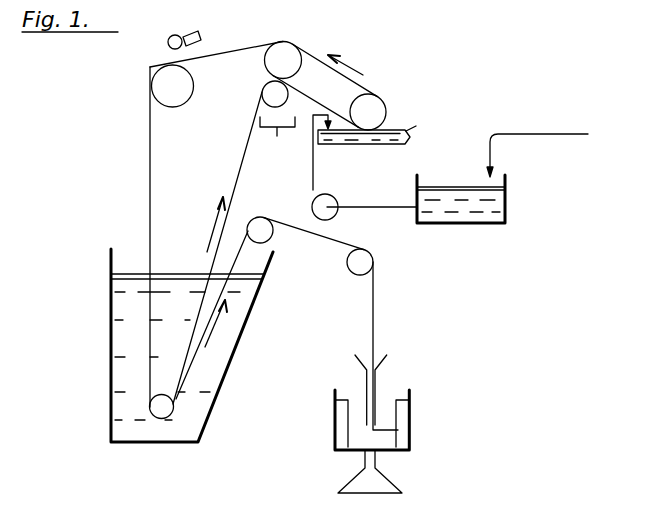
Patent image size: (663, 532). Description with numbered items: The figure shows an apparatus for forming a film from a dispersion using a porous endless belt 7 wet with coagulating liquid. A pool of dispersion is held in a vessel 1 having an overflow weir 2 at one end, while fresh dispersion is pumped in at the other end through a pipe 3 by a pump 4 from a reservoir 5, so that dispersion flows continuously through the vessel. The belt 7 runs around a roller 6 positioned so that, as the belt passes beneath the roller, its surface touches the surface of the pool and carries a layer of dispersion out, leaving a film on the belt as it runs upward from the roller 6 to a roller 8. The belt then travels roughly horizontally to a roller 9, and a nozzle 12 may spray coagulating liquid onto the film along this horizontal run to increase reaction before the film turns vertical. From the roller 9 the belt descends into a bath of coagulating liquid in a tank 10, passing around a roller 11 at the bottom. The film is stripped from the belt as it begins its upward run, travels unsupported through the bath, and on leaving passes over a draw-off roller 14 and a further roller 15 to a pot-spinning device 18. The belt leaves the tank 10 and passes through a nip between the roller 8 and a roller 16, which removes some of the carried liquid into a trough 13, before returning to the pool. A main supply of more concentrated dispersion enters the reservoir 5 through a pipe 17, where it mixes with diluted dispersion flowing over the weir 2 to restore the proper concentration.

The vessel 1 is at (343, 146).
The overflow weir 2 is at (412, 140).
The pipe 3 is at (312, 185).
The pump 4 is at (338, 212).
The reservoir 5 is at (507, 205).
The roller 6 is at (356, 98).
The porous endless belt 7 is at (302, 58).
The roller 8 is at (265, 62).
The roller 9 is at (163, 103).
The tank 10 is at (111, 338).
The roller 11 is at (165, 393).
The nozzle 12 is at (200, 30).
The trough 13 is at (277, 141).
The draw-off roller 14 is at (270, 236).
The roller 15 is at (352, 272).
The roller 16 is at (262, 97).
The pipe 17 is at (533, 133).
The pot-spinning device 18 is at (407, 418).